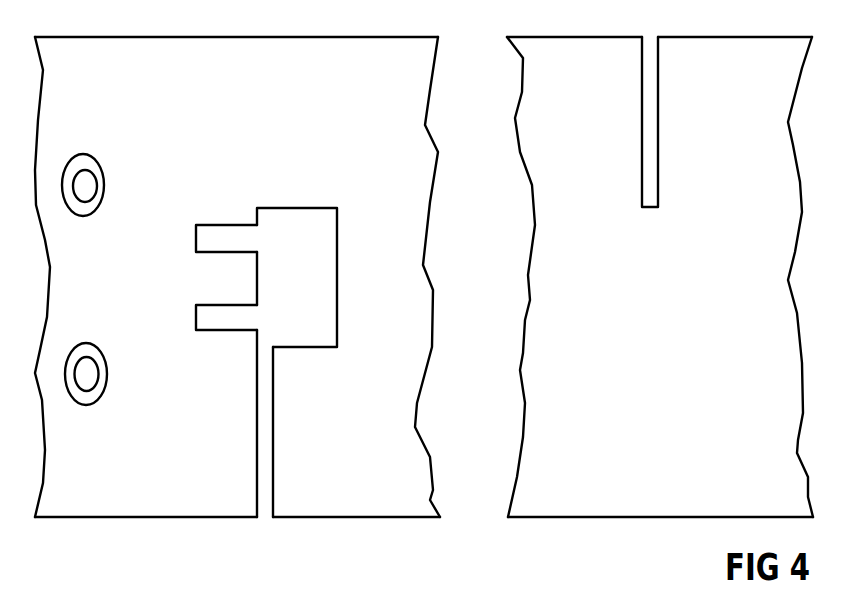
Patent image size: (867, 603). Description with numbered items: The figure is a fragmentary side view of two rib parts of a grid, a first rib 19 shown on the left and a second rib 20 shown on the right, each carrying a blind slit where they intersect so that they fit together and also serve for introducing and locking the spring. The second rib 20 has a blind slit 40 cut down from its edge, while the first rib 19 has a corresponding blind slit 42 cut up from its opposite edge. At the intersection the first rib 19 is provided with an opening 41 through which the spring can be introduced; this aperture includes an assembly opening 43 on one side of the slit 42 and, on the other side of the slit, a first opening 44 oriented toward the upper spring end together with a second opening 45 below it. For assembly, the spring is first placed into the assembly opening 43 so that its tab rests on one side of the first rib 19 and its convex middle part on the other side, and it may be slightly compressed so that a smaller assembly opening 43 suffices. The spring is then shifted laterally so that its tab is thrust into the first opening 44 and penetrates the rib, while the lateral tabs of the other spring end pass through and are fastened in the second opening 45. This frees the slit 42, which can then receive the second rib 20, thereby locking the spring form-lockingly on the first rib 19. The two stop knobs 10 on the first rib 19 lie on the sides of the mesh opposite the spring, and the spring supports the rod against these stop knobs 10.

The stop knob 10 is at (98, 183).
The first rib 19 is at (168, 503).
The second rib 20 is at (618, 497).
The blind slit 40 is at (653, 130).
The opening 41 is at (267, 310).
The blind slit 42 is at (265, 482).
The assembly opening 43 is at (320, 268).
The first opening 44 is at (203, 238).
The second opening 45 is at (203, 318).